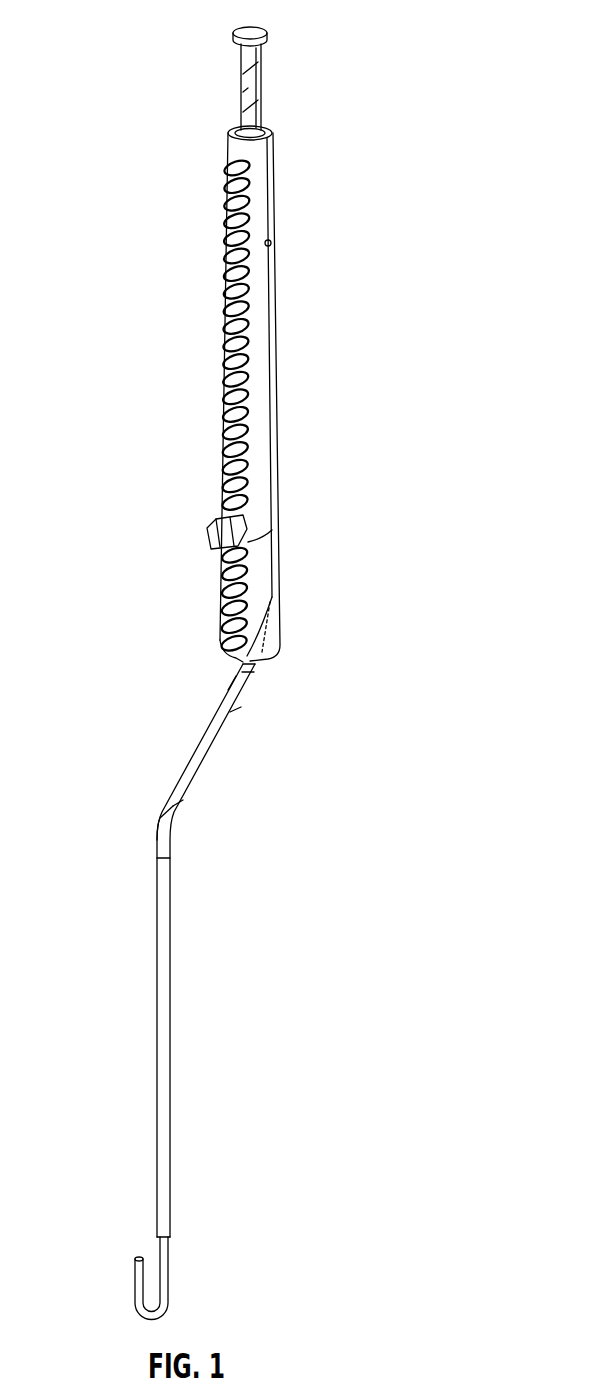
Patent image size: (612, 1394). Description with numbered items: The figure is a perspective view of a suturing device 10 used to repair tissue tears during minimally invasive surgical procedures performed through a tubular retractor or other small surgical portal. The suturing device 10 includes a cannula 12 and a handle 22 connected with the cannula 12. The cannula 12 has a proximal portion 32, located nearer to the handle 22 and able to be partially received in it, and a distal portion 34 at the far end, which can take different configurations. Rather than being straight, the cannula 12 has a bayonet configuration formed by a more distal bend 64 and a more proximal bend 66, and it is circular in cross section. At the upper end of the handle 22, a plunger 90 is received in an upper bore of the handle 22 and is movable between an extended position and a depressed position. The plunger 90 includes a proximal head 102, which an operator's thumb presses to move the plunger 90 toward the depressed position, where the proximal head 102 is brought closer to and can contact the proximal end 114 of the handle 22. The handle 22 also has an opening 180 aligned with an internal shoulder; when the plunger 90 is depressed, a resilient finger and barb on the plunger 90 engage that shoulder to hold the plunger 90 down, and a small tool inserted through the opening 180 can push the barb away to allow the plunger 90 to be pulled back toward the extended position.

The suturing device 10 is at (142, 632).
The cannula 12 is at (142, 938).
The handle 22 is at (272, 358).
The proximal portion 32 is at (257, 666).
The distal portion 34 is at (172, 1239).
The more distal bend 64 is at (163, 832).
The more proximal bend 66 is at (253, 692).
The plunger 90 is at (252, 85).
The proximal head 102 is at (263, 35).
The proximal end 114 is at (240, 131).
The opening 180 is at (271, 244).